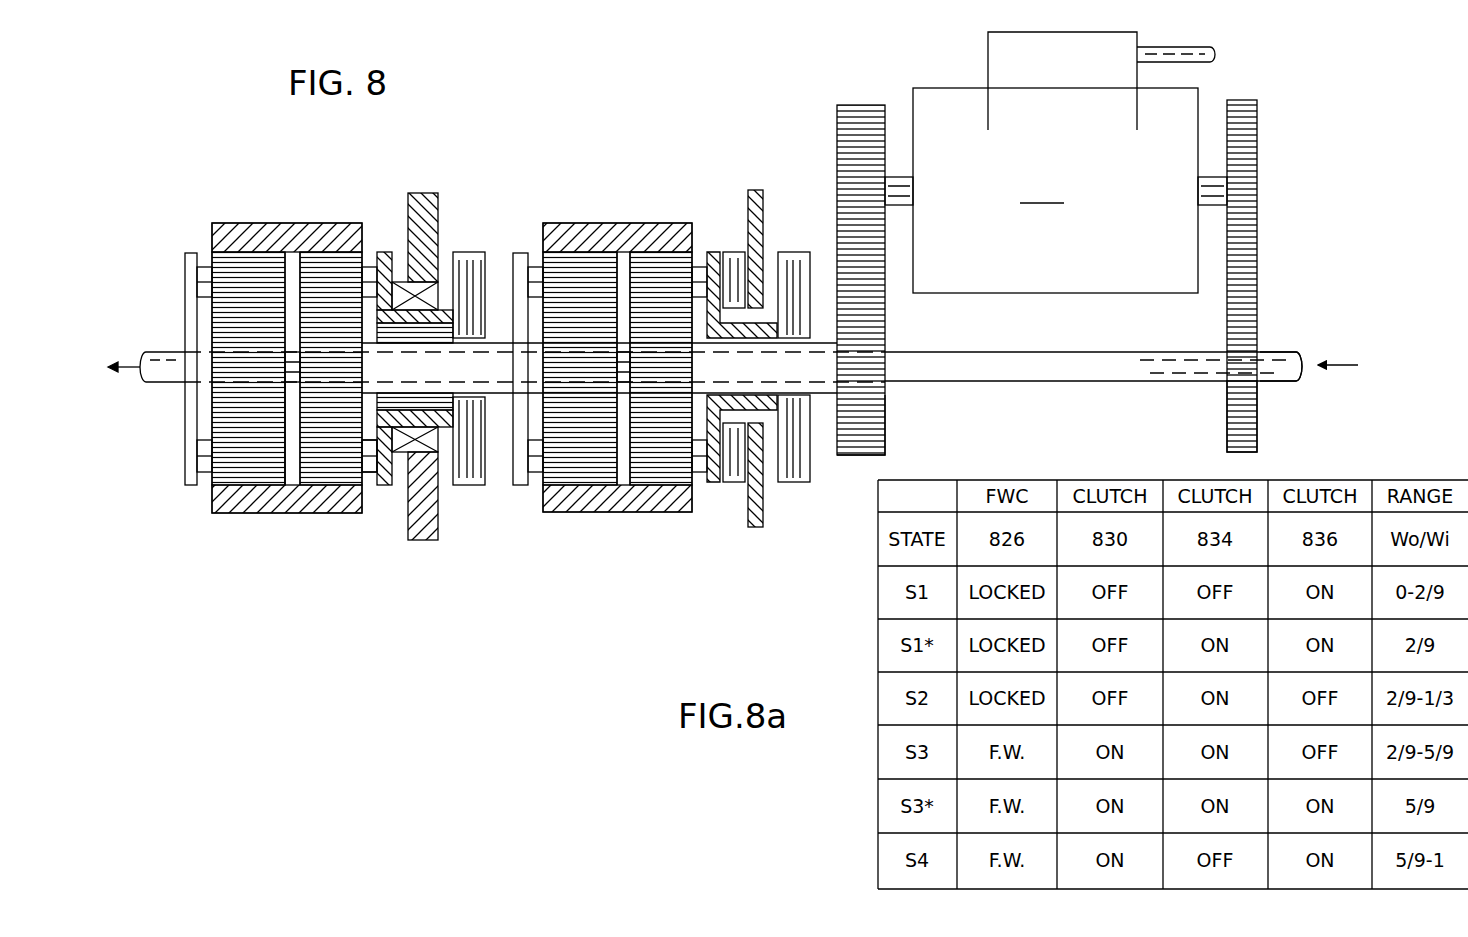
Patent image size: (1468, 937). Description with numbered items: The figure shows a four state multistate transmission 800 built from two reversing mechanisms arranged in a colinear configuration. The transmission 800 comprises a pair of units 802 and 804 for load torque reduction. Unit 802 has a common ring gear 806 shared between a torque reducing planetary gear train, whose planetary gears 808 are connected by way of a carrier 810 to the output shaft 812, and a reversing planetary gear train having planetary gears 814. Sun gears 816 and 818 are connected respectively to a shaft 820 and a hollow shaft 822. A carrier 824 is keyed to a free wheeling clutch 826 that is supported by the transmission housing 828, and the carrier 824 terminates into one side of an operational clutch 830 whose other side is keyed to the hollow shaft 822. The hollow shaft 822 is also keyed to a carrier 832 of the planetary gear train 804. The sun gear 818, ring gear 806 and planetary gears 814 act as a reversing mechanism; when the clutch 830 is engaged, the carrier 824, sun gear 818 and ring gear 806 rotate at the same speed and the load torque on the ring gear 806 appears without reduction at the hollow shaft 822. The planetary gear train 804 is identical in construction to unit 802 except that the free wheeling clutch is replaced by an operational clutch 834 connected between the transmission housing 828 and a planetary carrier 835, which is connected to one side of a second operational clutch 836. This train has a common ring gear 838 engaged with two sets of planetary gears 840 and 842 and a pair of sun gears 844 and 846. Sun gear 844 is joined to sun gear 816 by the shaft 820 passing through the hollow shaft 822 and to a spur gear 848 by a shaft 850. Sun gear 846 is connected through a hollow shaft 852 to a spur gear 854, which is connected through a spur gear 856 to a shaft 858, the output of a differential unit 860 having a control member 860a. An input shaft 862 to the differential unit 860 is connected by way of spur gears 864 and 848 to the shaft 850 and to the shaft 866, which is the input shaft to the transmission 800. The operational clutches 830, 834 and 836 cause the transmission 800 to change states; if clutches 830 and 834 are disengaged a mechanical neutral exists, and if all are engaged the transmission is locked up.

The transmission 800 is at (613, 150).
The unit 802 is at (249, 358).
The planetary gear train 804 is at (643, 375).
The common ring gear 806 is at (246, 514).
The planetary gears 808 is at (211, 262).
The carrier 810 is at (185, 440).
The output shaft 812 is at (169, 353).
The planetary gears 814 is at (364, 255).
The sun gear 816 is at (212, 335).
The sun gear 818 is at (293, 485).
The shaft 820 is at (285, 383).
The hollow shaft 822 is at (500, 397).
The carrier 824 is at (383, 484).
The free wheeling clutch 826 is at (438, 448).
The transmission housing 828 is at (408, 200).
The operational clutch 830 is at (468, 252).
The carrier 832 is at (507, 325).
The operational clutch 834 is at (735, 252).
The planetary carrier 835 is at (717, 252).
The second operational clutch 836 is at (780, 252).
The common ring gear 838 is at (602, 512).
The planetary gears 840 is at (540, 477).
The planetary gears 842 is at (625, 465).
The sun gear 844 is at (542, 328).
The sun gear 846 is at (697, 445).
The spur gear 848 is at (1257, 400).
The shaft 850 is at (1140, 380).
The hollow shaft 852 is at (832, 395).
The spur gear 854 is at (885, 395).
The spur gear 856 is at (837, 130).
The shaft 858 is at (900, 177).
The differential unit 860 is at (1055, 162).
The control member 860a is at (1195, 47).
The input shaft 862 is at (1213, 207).
The spur gear 864 is at (1257, 145).
The shaft 866 is at (1277, 350).